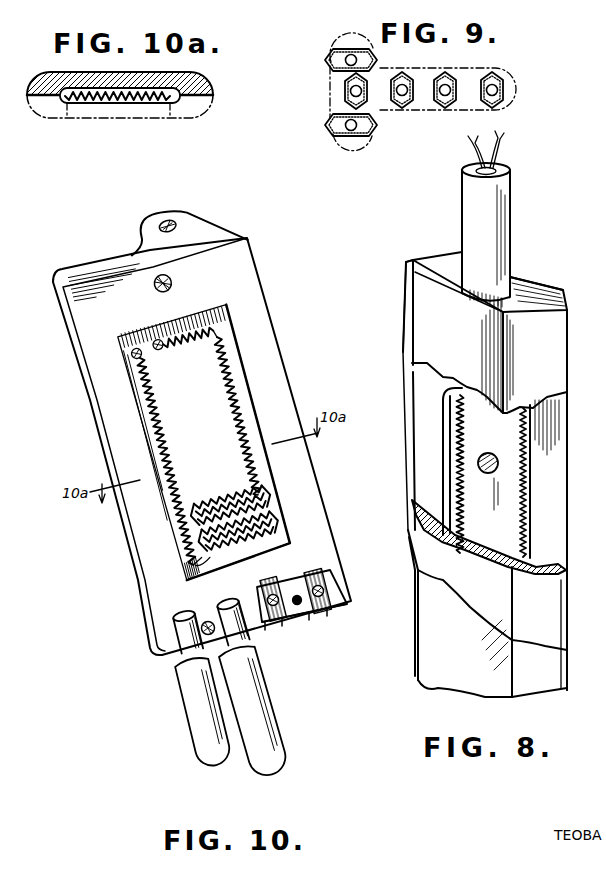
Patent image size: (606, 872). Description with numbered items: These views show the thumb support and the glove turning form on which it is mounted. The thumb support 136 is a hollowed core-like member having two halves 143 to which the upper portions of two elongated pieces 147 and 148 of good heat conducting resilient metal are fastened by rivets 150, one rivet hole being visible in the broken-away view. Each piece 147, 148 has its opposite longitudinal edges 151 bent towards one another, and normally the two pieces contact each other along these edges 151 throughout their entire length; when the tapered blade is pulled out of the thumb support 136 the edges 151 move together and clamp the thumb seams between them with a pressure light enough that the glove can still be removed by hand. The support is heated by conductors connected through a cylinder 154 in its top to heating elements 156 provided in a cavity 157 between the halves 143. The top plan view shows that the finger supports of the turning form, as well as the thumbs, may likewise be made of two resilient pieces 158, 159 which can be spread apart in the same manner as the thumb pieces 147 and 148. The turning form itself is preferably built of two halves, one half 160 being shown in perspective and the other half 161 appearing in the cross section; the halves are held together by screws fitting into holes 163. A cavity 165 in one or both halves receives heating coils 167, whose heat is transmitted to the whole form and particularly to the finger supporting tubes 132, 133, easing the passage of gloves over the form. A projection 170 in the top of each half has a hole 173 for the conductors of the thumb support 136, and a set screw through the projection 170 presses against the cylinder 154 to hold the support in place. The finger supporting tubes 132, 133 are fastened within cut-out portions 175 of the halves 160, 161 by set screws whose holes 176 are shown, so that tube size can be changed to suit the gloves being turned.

In FIG. 10, the finger supporting tube 132 is at (224, 766).
In FIG. 10, the finger supporting tube 133 is at (268, 780).
In FIG. 8, the thumb support 136 is at (406, 357).
In FIG. 8, the half of thumb support core 143 is at (548, 411).
In FIG. 8, the elongated piece of resilient metal 147 is at (533, 283).
In FIG. 8, the elongated piece of resilient metal 148 is at (407, 270).
In FIG. 8, the rivet 150 is at (497, 470).
In FIG. 8, the longitudinal edge 151 is at (567, 683).
In FIG. 8, the cylinder 154 is at (470, 204).
In FIG. 8, the heating element 156 is at (455, 455).
In FIG. 8, the cavity 157 is at (532, 492).
In FIG. 9, the resilient piece 158 is at (346, 95).
In FIG. 9, the resilient piece 159 is at (366, 98).
In FIG. 10A, the half of glove turning form 160 is at (202, 80).
In FIG. 10, the half of glove turning form 160 is at (258, 302).
In FIG. 10A, the half of glove turning form 161 is at (203, 113).
In FIG. 10, the hole 163 is at (160, 278).
In FIG. 10A, the cavity 165 is at (82, 104).
In FIG. 10, the cavity 165 is at (253, 382).
In FIG. 8, the cavity 165 is at (497, 150).
In FIG. 10A, the heating coil 167 is at (155, 105).
In FIG. 10, the heating coil 167 is at (262, 412).
In FIG. 10, the projection 170 is at (147, 224).
In FIG. 10, the hole 173 is at (176, 226).
In FIG. 10, the cut-out portion 175 is at (318, 614).
In FIG. 10, the set screw hole 176 is at (274, 590).